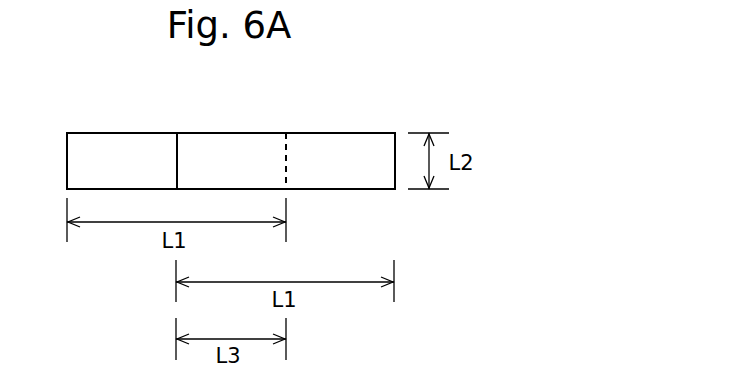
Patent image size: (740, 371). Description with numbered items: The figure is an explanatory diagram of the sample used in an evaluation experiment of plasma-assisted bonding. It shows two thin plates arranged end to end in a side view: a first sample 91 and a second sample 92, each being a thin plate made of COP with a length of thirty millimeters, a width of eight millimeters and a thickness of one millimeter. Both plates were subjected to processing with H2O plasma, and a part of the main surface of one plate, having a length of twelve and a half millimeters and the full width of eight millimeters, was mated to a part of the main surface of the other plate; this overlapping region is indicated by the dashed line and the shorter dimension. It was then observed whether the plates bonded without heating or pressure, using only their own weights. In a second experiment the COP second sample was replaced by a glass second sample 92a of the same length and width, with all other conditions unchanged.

The first sample 91 is at (115, 155).
The second sample 92 is at (327, 136).
The second sample 92a is at (332, 157).